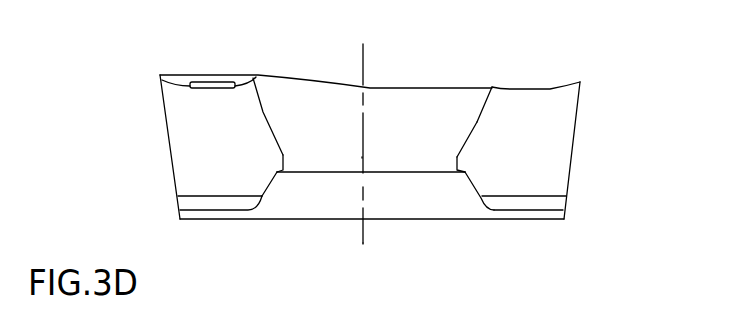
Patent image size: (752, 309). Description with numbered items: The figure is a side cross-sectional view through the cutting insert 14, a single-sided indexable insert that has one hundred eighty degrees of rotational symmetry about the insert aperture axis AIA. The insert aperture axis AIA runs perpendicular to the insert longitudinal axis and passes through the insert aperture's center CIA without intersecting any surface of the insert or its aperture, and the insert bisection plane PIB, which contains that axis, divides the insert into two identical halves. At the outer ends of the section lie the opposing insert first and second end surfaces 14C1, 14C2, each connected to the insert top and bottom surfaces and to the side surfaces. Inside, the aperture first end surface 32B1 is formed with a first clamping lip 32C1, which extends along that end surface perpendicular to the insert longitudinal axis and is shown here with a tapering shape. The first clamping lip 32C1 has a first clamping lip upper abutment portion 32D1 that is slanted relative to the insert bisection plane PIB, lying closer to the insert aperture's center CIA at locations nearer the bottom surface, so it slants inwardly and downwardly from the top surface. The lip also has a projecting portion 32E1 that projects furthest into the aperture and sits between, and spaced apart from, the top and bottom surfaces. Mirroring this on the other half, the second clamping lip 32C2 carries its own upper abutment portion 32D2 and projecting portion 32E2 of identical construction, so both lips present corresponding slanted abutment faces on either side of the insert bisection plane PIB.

The cutting insert 14 is at (575, 57).
The insert first end surface 14C1 is at (575, 147).
The insert second end surface 14C2 is at (167, 148).
The aperture first end surface 32B1 is at (480, 98).
The first clamping lip 32C1 is at (477, 122).
The first clamping lip upper abutment portion 32D1 is at (425, 100).
The second clamping lip 32C2 is at (263, 115).
The second clamping lip upper abutment portion 32D2 is at (309, 100).
The projecting portion 32E1 is at (466, 178).
The projecting portion 32E2 is at (278, 173).
The insert aperture axis AIA is at (376, 160).
The insert bisection plane PIB is at (396, 260).
The insert aperture's center CIA is at (362, 158).